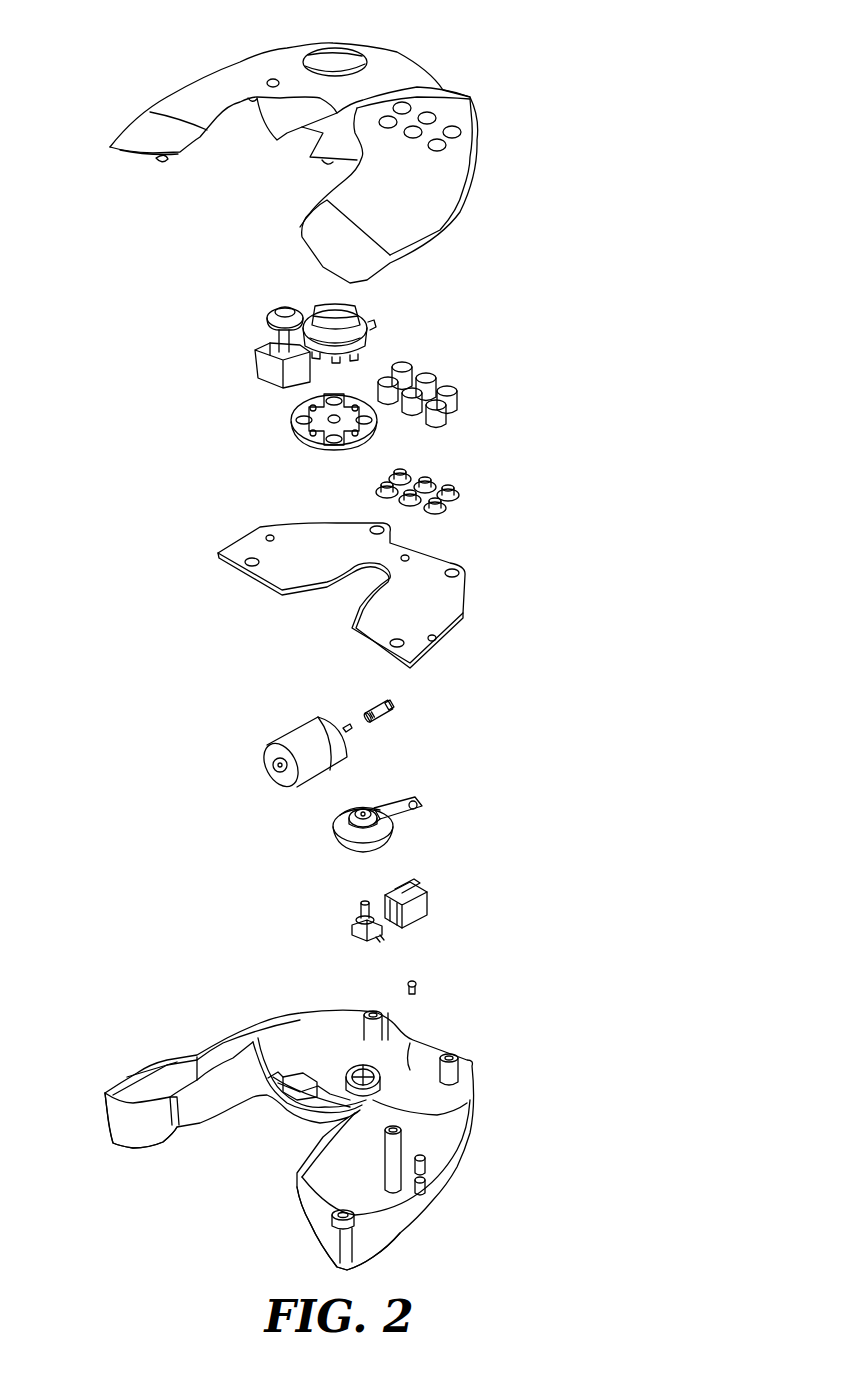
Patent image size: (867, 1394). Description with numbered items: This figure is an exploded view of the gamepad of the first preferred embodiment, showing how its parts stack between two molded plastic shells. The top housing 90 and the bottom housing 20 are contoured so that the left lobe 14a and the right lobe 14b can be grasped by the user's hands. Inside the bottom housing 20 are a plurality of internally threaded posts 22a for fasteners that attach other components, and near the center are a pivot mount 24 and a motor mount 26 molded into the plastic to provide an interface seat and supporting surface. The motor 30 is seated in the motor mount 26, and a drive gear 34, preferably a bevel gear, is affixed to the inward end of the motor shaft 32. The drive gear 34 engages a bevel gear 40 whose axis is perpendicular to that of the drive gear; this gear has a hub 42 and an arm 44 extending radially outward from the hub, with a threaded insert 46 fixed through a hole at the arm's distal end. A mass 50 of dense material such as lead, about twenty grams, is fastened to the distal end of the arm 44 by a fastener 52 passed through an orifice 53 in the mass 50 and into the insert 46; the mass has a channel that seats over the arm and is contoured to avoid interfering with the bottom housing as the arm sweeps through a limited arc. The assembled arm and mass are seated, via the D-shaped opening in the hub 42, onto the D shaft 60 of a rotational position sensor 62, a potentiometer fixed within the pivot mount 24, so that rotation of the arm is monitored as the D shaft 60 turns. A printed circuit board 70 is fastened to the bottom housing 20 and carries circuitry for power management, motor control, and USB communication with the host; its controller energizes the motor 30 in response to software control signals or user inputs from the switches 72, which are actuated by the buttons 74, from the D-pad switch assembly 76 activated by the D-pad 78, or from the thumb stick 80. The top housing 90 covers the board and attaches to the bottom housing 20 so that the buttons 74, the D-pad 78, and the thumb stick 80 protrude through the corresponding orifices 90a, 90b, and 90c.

The top housing 90 is at (325, 142).
The orifices 90a is at (455, 130).
The orifice 90b is at (353, 50).
The orifice 90c is at (267, 76).
The thumb stick 80 is at (270, 330).
The D-pad 78 is at (367, 310).
The buttons 74 is at (440, 372).
The D-pad switch assembly 76 is at (298, 440).
The switches 72 is at (455, 482).
The printed circuit board 70 is at (253, 577).
The motor 30 is at (299, 754).
The motor shaft 32 is at (347, 733).
The drive gear 34 is at (397, 700).
The bevel gear 40 is at (370, 834).
The hub 42 is at (340, 832).
The arm 44 is at (417, 815).
The insert 46 is at (380, 810).
The D shaft 60 is at (315, 939).
The rotational position sensor 62 is at (363, 935).
The mass 50 is at (489, 906).
The orifice 53 is at (423, 895).
The fastener 52 is at (417, 982).
The bottom housing 20 is at (293, 1113).
The motor mount 26 is at (257, 1043).
The pivot mount 24 is at (375, 1062).
The internally threaded posts 22a is at (407, 1140).
The left lobe 14a is at (108, 1120).
The right lobe 14b is at (313, 1250).